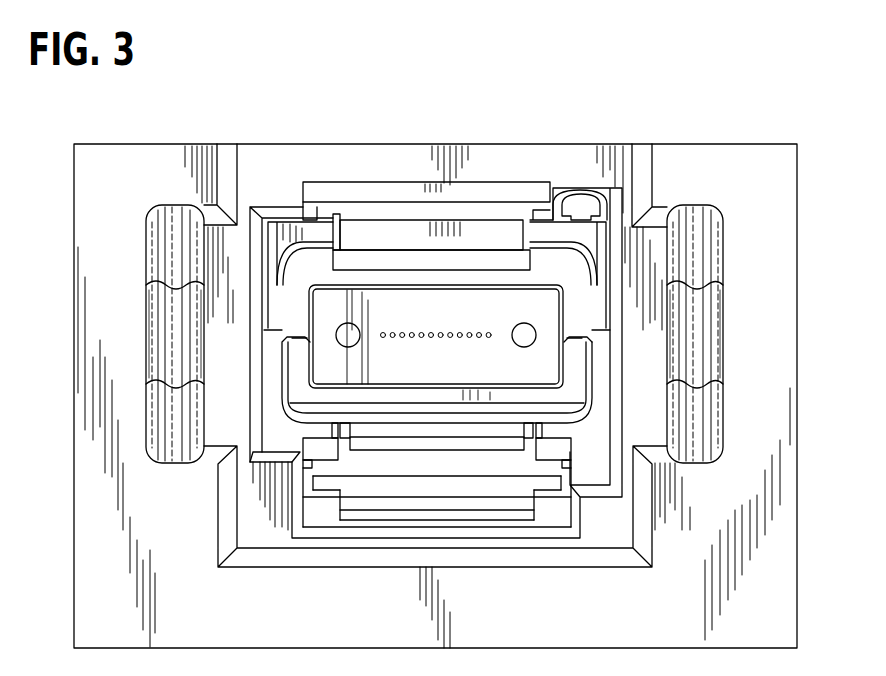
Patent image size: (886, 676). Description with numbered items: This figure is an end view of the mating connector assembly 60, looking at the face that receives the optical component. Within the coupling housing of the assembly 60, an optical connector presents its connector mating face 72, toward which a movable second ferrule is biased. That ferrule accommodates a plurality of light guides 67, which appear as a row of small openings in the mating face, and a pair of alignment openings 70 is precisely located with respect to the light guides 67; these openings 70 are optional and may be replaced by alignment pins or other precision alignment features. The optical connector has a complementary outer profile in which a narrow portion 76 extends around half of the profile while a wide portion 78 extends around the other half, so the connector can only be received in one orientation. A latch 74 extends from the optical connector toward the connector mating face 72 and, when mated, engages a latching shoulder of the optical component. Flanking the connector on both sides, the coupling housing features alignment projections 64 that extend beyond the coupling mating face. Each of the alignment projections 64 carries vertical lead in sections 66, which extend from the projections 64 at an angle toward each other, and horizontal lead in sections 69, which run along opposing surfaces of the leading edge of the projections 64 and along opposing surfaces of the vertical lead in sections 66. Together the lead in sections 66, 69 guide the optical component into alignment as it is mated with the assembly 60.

The mating connector assembly 60 is at (702, 142).
The alignment projections 64 is at (150, 358).
The vertical lead in sections 66 is at (178, 242).
The light guides 67 is at (488, 337).
The horizontal lead in sections 69 is at (190, 327).
The alignment openings 70 is at (524, 334).
The connector mating face 72 is at (583, 435).
The latch 74 is at (422, 190).
The narrow portion 76 is at (298, 375).
The wide portion 78 is at (275, 238).